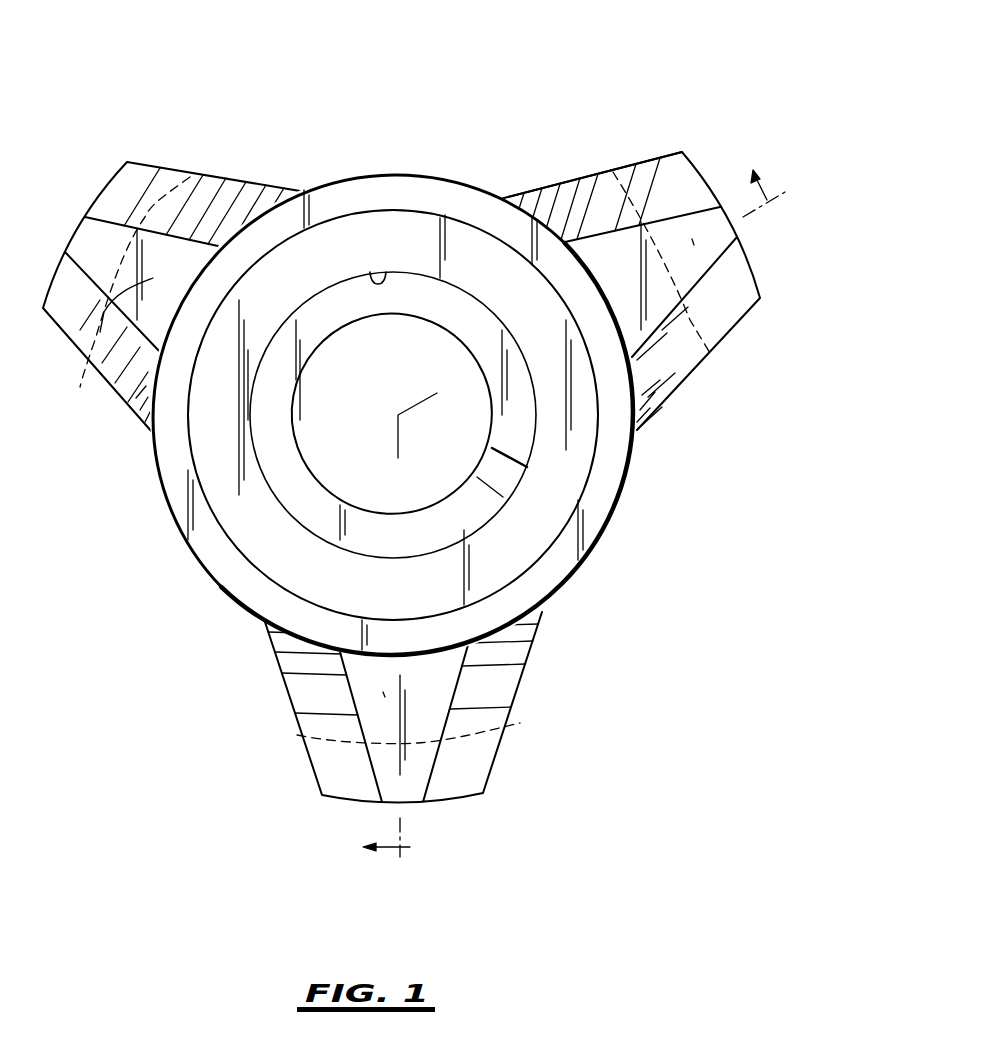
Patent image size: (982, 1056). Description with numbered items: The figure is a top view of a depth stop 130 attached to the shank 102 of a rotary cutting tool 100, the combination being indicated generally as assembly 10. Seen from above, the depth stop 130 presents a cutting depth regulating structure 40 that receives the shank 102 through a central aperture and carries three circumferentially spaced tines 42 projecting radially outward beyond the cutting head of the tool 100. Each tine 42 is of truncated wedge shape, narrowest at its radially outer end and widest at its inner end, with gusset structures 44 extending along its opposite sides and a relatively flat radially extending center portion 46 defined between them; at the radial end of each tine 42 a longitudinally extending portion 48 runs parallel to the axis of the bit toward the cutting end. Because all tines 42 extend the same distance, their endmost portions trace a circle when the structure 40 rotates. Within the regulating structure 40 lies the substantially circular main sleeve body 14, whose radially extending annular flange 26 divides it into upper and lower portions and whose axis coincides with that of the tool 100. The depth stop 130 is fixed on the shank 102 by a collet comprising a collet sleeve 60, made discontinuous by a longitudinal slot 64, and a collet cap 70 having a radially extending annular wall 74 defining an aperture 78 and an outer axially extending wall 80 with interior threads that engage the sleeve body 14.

The combination of depth stop and rotary cutting tool 10 is at (417, 450).
The main sleeve body 14 is at (640, 478).
The radially extending annular flange 26 is at (593, 553).
The cutting depth regulating structure 40 is at (575, 168).
The tines 42 is at (153, 157).
The gusset structures 44 is at (213, 190).
The radially extending center portion 46 is at (100, 335).
The longitudinally extending portion 48 is at (82, 380).
The collet sleeve 60 is at (275, 461).
The longitudinal slot 64 is at (500, 483).
The collet cap 70 is at (418, 200).
The radially extending annular wall 74 is at (333, 237).
The aperture 78 is at (370, 272).
The outer axially extending wall 80 is at (232, 550).
The rotary cutting tool 100 is at (503, 427).
The shank 102 is at (347, 477).
The depth stop 130 is at (140, 434).